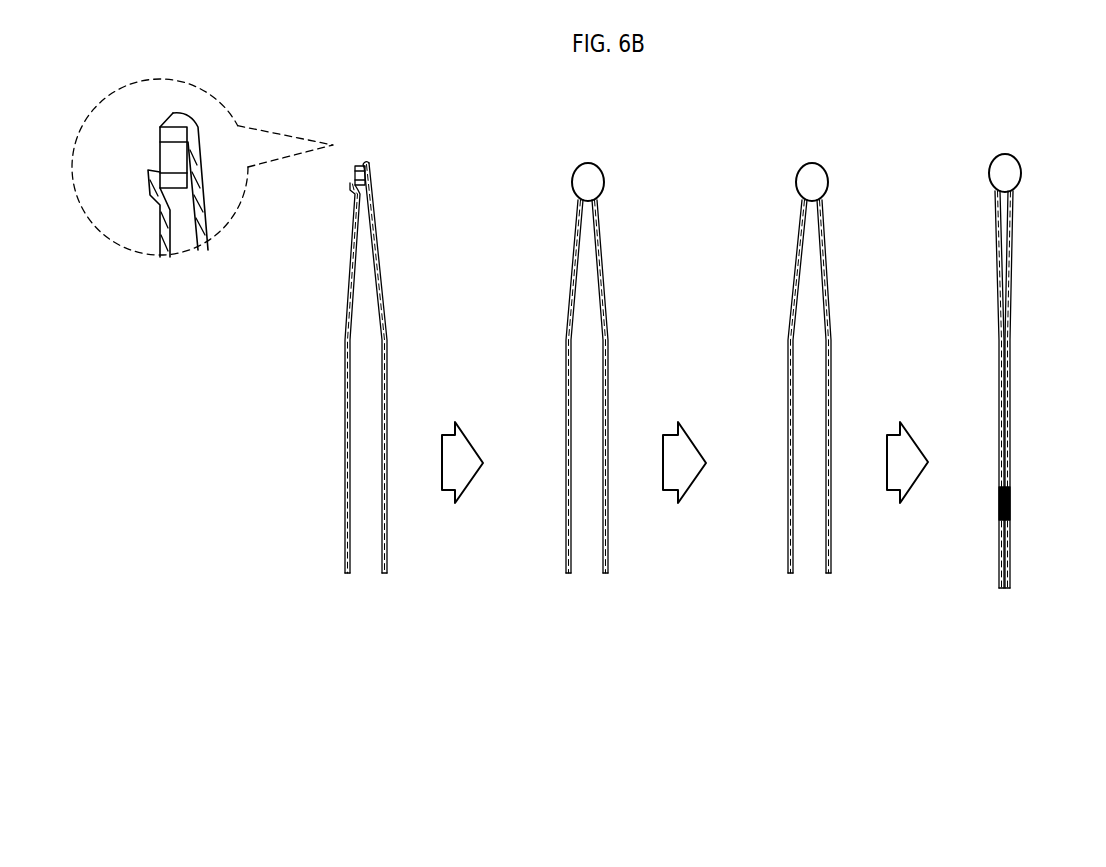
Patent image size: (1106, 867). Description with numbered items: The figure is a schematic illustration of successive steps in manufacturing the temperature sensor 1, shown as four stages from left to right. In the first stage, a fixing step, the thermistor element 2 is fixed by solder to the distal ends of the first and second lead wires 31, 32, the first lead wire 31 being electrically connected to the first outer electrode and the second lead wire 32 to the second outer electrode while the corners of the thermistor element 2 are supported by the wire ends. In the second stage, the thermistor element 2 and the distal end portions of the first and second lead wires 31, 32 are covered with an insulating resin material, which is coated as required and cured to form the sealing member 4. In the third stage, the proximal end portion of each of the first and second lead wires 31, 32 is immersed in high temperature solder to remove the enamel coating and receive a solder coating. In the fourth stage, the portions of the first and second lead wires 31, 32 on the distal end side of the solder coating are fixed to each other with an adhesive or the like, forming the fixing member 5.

The temperature sensor 1 is at (1045, 371).
The thermistor element 2 is at (160, 158).
The sealing member 4 is at (574, 178).
The fixing member 5 is at (1009, 488).
The first lead wire 31 is at (385, 576).
The second lead wire 32 is at (347, 576).